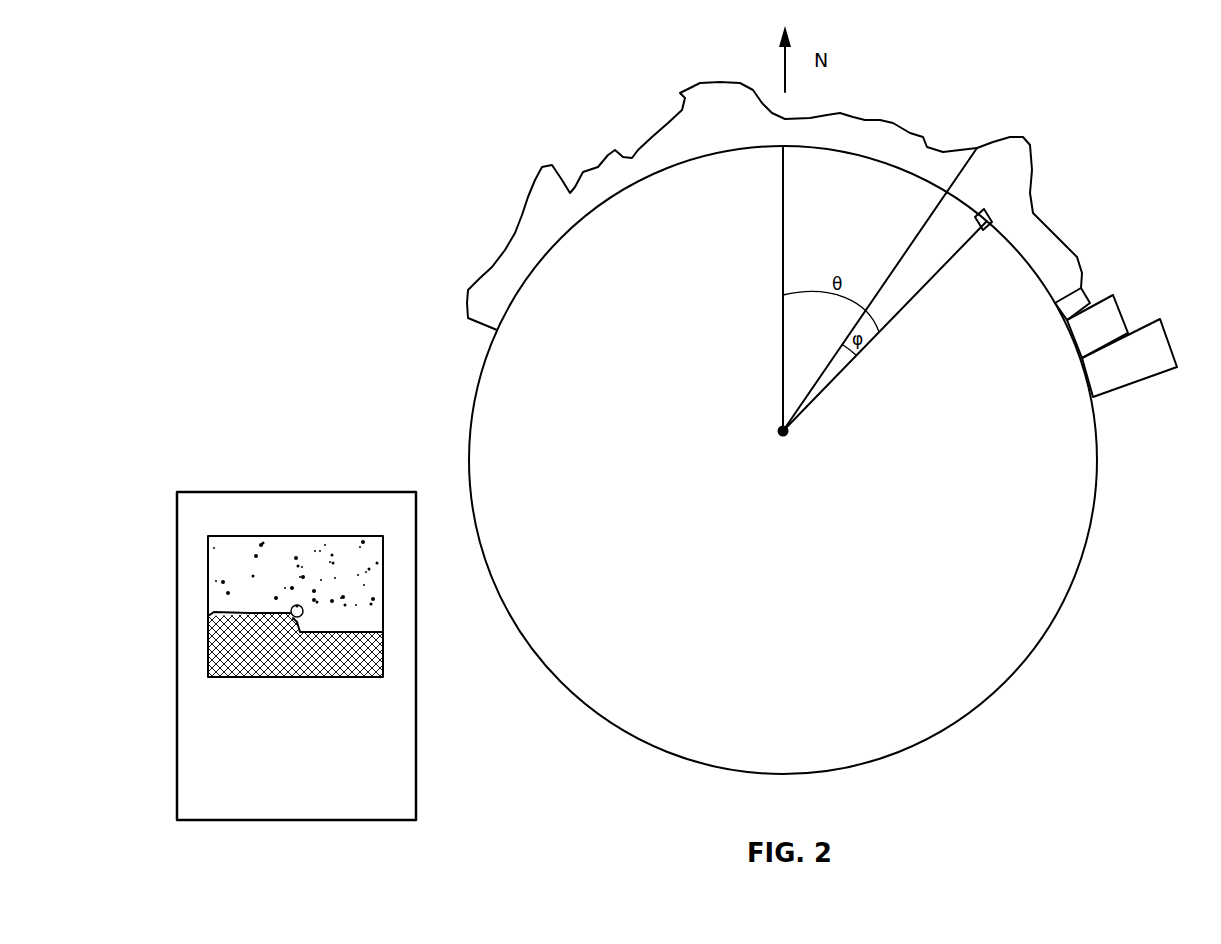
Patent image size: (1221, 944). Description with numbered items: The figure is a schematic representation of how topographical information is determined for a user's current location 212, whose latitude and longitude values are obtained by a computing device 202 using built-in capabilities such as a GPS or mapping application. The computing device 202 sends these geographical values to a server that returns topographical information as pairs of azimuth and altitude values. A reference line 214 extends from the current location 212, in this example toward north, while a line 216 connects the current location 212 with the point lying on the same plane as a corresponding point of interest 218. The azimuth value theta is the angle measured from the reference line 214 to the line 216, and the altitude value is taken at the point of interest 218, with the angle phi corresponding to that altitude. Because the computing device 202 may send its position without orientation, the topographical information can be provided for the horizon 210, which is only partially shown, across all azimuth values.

The computing device 202 is at (258, 492).
The horizon 210 is at (1033, 175).
The current location 212 is at (783, 431).
The reference line 214 is at (783, 223).
The line 216 is at (897, 318).
The point of interest 218 is at (988, 222).